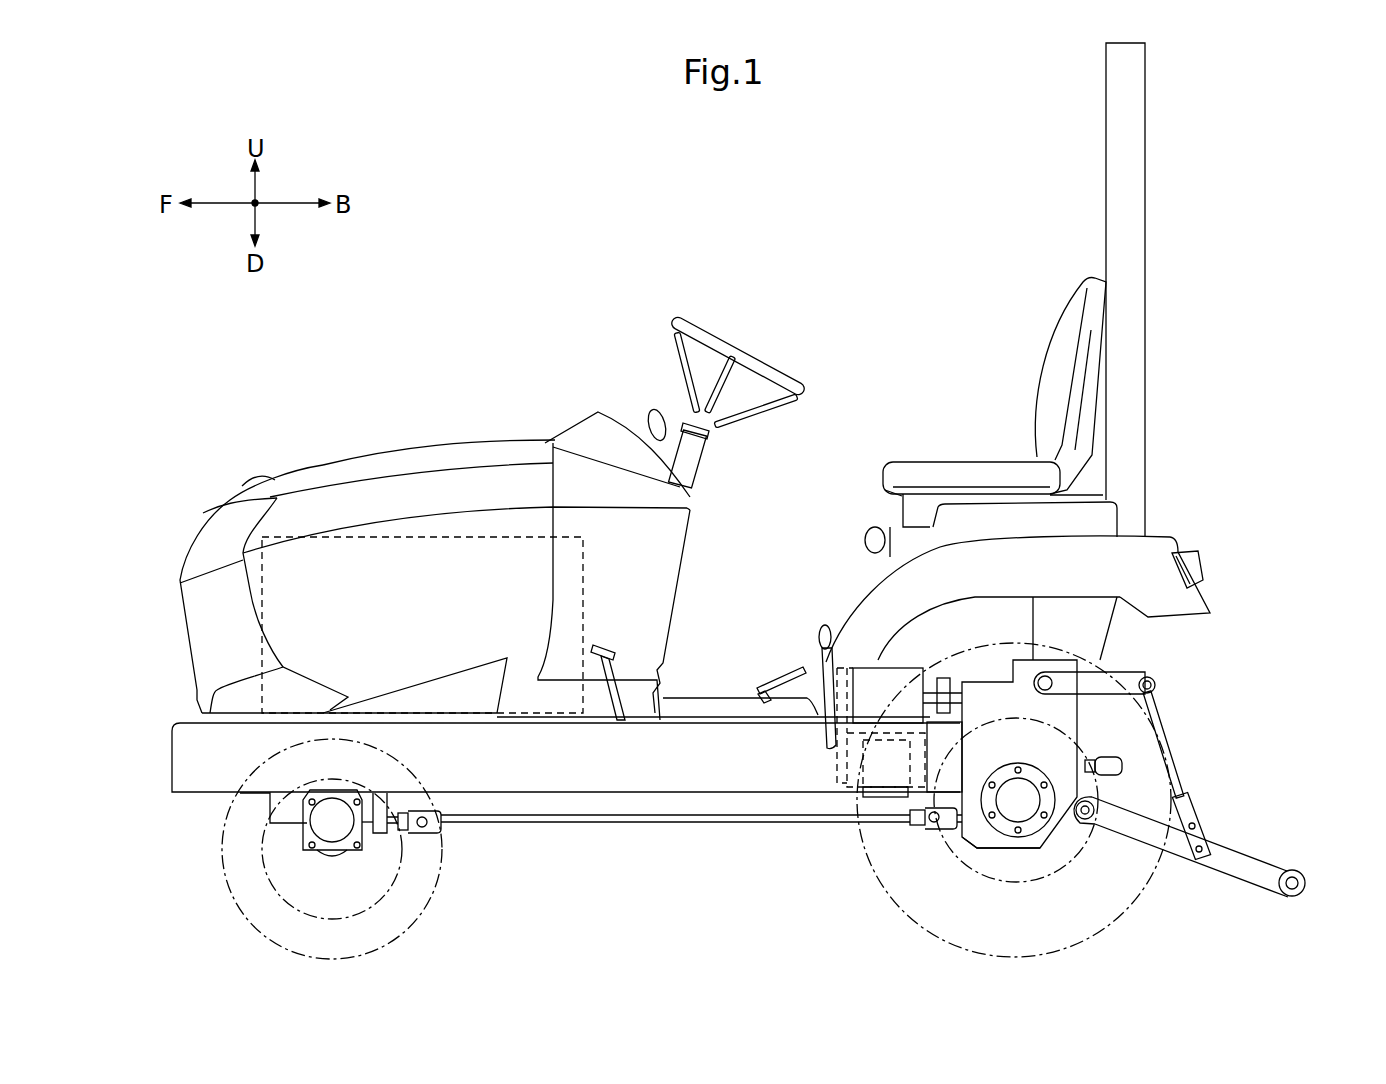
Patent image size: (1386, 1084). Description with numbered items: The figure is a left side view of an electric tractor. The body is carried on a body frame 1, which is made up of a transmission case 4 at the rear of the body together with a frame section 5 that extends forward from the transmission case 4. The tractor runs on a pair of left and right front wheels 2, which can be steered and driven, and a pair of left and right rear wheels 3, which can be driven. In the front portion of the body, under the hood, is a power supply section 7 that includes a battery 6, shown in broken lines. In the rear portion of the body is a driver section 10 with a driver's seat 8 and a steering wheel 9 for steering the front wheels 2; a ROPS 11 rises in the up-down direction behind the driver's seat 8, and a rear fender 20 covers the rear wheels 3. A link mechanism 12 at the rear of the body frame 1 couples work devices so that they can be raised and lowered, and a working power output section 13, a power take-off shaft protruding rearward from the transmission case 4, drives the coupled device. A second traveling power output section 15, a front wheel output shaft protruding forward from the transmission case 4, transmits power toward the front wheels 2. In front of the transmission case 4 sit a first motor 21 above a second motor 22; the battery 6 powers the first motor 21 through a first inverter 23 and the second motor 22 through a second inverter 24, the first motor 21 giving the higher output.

The body frame 1 is at (624, 803).
The front wheels 2 is at (222, 870).
The rear wheels 3 is at (915, 922).
The transmission case 4 is at (982, 840).
The frame section 5 is at (508, 775).
The battery 6 is at (398, 537).
The power supply section 7 is at (321, 458).
The driver's seat 8 is at (970, 473).
The steering wheel 9 is at (707, 338).
The driver section 10 is at (908, 333).
The ROPS 11 is at (1140, 130).
The link mechanism 12 is at (1192, 674).
The working power output section 13 is at (1115, 767).
The second traveling power output section 15 is at (985, 840).
The rear fender 20 is at (973, 640).
The first motor 21 is at (848, 665).
The second motor 22 is at (868, 735).
The first inverter 23 is at (897, 672).
The second inverter 24 is at (893, 798).